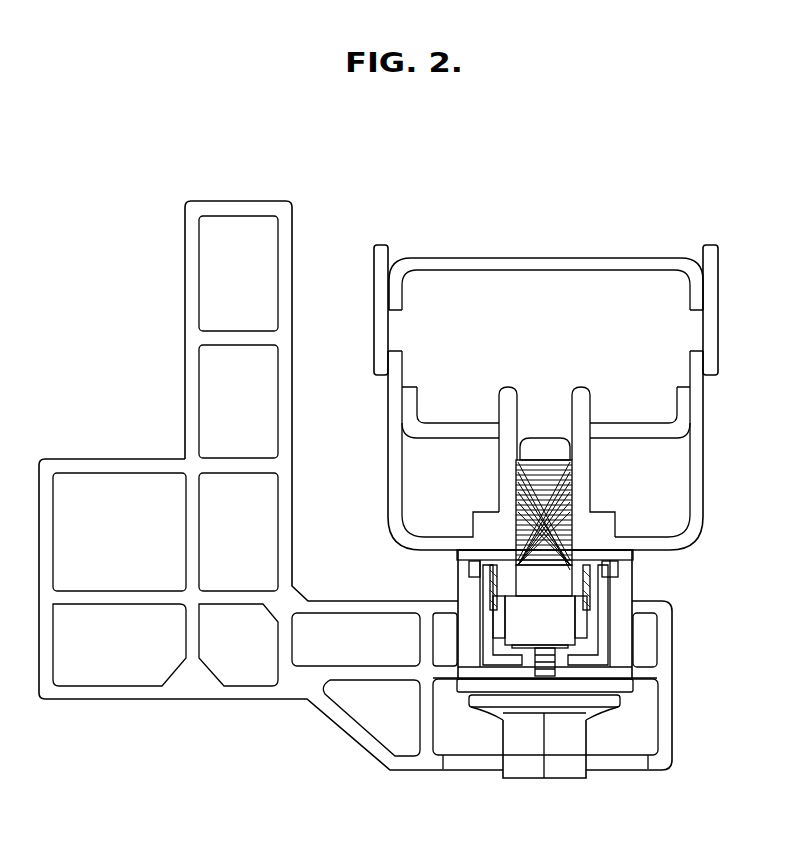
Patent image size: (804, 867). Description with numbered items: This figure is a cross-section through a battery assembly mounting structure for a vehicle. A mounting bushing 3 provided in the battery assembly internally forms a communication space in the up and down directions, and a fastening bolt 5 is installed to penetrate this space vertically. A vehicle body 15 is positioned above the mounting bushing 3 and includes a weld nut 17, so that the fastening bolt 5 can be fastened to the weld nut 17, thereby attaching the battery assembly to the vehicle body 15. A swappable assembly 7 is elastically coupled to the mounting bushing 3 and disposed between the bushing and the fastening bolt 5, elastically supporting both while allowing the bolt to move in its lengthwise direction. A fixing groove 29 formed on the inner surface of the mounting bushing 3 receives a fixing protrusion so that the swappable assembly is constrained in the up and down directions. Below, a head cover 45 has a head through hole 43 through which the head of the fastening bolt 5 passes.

The vehicle body 15 is at (700, 437).
The weld nut 17 is at (583, 483).
The fixing groove 29 is at (603, 547).
The mounting bushing 3 is at (623, 585).
The swappable assembly 7 is at (598, 625).
The head through hole 43 is at (650, 762).
The head cover 45 is at (481, 762).
The fastening bolt 5 is at (568, 757).